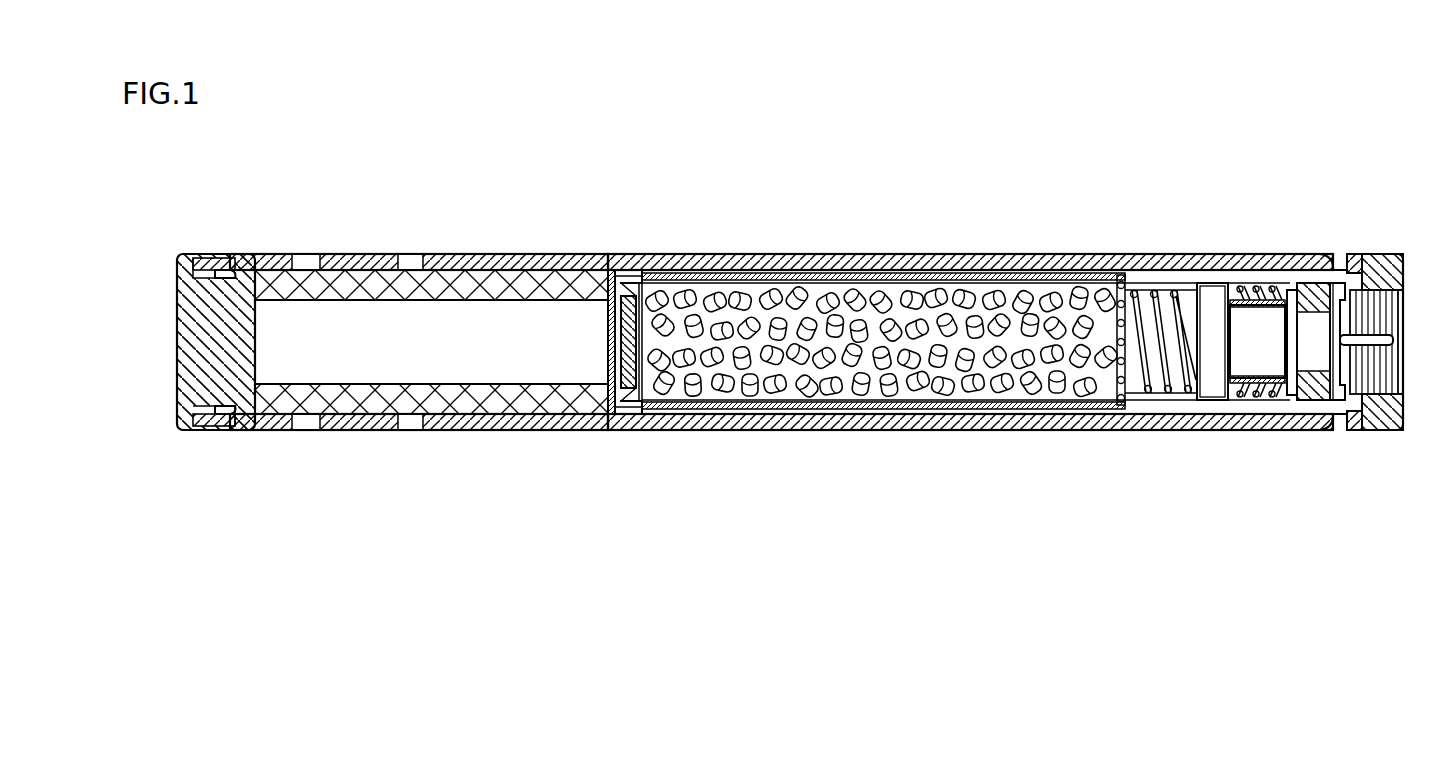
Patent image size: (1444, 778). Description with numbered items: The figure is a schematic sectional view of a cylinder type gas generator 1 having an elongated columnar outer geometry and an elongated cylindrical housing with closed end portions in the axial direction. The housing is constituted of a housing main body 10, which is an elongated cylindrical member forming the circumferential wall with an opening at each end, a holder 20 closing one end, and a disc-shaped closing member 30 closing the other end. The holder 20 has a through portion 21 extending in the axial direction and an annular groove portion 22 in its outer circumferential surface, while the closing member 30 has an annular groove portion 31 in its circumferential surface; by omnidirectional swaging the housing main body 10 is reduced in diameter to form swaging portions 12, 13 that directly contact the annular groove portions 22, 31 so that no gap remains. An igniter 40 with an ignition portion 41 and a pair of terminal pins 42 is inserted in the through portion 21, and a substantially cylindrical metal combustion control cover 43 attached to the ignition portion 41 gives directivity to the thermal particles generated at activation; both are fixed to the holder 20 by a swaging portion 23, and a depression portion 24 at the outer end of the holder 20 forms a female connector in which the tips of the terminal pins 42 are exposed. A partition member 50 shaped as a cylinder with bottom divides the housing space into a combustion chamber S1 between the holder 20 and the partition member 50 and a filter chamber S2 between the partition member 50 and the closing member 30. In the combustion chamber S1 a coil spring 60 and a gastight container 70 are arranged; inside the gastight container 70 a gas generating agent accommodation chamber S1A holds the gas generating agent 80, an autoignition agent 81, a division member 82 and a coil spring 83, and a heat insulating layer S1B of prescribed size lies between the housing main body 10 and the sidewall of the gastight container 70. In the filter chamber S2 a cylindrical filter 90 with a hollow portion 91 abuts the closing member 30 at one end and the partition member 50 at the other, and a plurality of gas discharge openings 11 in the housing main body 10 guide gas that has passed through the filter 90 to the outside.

The cylinder type gas generator 1 is at (188, 195).
The housing main body 10 is at (790, 262).
The gas discharge openings 11 is at (409, 262).
The swaging portion 12 is at (1333, 406).
The swaging portion 13 is at (226, 410).
The holder 20 is at (1386, 262).
The through portion 21 is at (1318, 360).
The annular groove portion 22 is at (1335, 275).
The swaging portion 23 is at (1283, 296).
The depression portion 24 is at (1375, 382).
The closing member 30 is at (240, 342).
The annular groove portion 31 is at (232, 278).
The igniter 40 is at (1253, 292).
The ignition portion 41 is at (1248, 340).
The terminal pins 42 is at (1360, 334).
The combustion control cover 43 is at (1243, 404).
The partition member 50 is at (614, 348).
The coil spring 60 is at (1265, 292).
The gastight container 70 is at (811, 405).
The gas generating agent 80 is at (886, 298).
The autoignition agent 81 is at (633, 332).
The division member 82 is at (640, 386).
The coil spring 83 is at (1164, 395).
The filter 90 is at (360, 400).
The hollow portion 91 is at (460, 345).
The combustion chamber S1 is at (963, 277).
The gas generating agent accommodation chamber S1A is at (1063, 281).
The heat insulating layer S1B is at (975, 404).
The filter chamber S2 is at (345, 345).